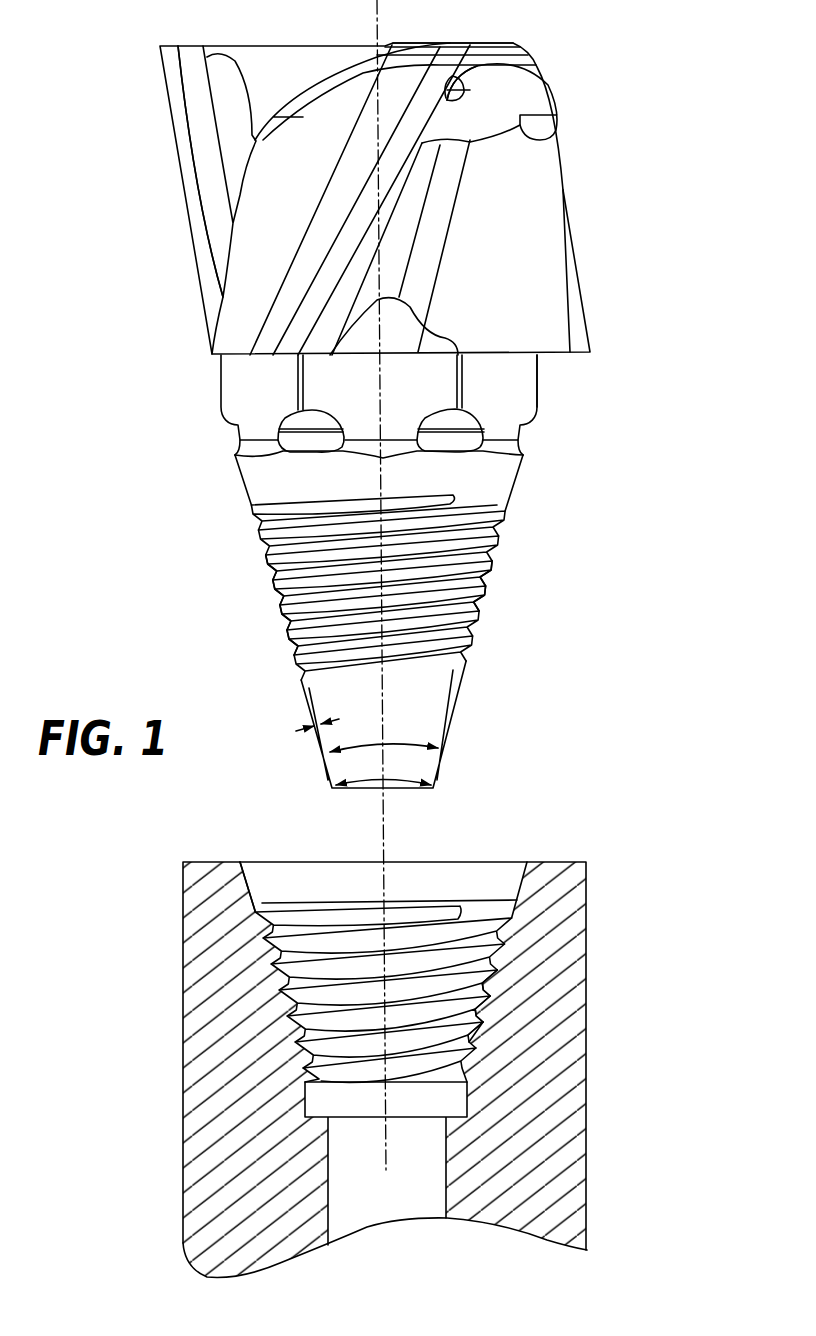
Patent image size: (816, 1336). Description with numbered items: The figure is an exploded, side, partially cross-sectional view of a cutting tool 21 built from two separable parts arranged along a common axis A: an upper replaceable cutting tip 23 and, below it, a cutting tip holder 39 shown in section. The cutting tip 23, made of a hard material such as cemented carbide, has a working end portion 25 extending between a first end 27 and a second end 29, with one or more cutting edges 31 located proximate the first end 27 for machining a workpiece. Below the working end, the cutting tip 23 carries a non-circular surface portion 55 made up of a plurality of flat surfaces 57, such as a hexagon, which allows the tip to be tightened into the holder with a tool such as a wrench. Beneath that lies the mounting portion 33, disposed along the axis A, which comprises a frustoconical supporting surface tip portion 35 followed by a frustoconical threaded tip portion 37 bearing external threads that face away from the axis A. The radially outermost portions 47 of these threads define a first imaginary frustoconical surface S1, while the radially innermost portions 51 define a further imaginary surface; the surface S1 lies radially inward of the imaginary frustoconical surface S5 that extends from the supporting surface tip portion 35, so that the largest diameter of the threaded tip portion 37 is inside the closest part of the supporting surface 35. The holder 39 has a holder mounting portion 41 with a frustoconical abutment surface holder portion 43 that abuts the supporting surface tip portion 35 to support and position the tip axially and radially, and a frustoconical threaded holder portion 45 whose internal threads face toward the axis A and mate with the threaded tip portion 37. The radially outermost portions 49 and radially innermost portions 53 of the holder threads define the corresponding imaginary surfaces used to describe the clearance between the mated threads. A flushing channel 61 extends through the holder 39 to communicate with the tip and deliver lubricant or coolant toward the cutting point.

The cutting tool 21 is at (682, 17).
The replaceable cutting tip 23 is at (587, 167).
The working end portion 25 is at (566, 138).
The first end 27 is at (501, 44).
The second end 29 is at (530, 440).
The cutting edges 31 is at (160, 72).
The mounting portion 33 is at (413, 662).
The frustoconical supporting surface tip portion 35 is at (498, 478).
The frustoconical threaded tip portion 37 is at (462, 566).
The cutting tip holder 39 is at (170, 1055).
The holder mounting portion 41 is at (384, 1021).
The frustoconical abutment surface holder portion 43 is at (283, 890).
The frustoconical threaded holder portion 45 is at (306, 985).
The radially outermost portions of the frustoconical threaded tip portion 47 is at (293, 663).
The radially outermost portions of the frustoconical threaded holder portion 49 is at (497, 1010).
The radially innermost portions of the frustoconical threaded tip portion 51 is at (287, 603).
The radially innermost portions of the frustoconical threaded holder portion 53 is at (445, 1062).
The non-circular surface portion 55 is at (516, 378).
The flat surfaces 57 is at (343, 393).
The flushing channels 61 is at (446, 1196).
The axis A is at (378, 30).
The first imaginary frustoconical surface S1 is at (310, 698).
The imaginary frustoconical surface S5 is at (330, 770).